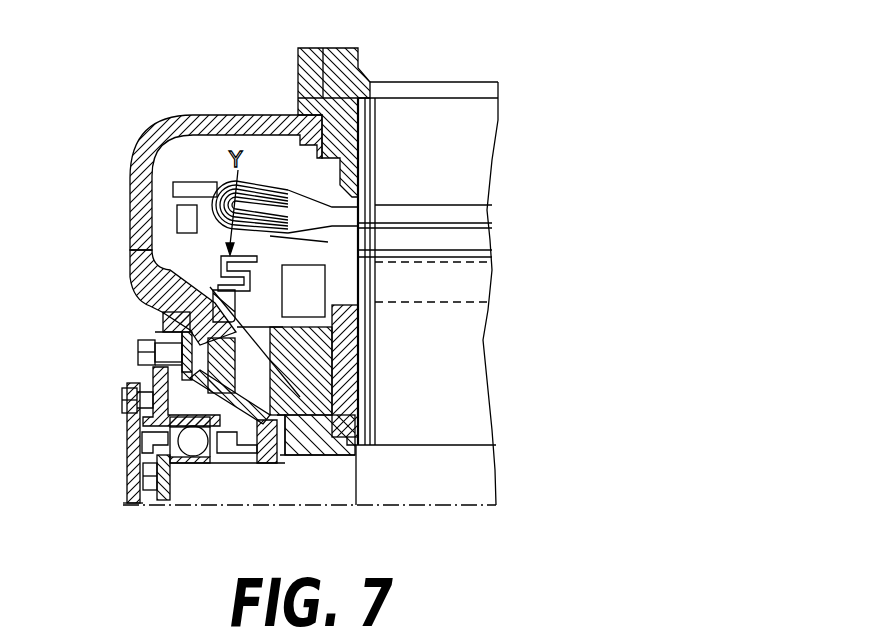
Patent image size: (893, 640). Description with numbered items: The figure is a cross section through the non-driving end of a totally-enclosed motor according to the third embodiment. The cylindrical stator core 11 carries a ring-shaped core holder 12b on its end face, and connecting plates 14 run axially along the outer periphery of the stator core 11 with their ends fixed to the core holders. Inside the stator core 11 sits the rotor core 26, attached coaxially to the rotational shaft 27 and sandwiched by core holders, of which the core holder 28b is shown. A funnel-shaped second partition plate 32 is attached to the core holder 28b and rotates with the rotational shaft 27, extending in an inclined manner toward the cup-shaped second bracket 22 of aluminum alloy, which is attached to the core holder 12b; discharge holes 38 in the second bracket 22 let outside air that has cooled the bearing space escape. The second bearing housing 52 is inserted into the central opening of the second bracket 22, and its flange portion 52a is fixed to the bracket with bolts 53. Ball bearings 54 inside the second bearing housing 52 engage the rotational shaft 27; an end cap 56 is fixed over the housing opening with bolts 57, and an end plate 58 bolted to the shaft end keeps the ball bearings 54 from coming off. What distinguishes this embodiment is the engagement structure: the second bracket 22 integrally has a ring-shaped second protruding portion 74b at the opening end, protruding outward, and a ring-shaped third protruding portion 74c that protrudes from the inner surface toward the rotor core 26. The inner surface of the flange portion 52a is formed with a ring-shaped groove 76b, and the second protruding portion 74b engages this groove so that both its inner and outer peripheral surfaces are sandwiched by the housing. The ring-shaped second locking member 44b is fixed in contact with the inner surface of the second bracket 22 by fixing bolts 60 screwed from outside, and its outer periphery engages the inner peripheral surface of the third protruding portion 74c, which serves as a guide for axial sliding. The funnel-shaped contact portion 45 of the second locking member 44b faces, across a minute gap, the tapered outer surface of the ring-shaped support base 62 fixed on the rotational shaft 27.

The stator core 11 is at (477, 117).
The core holder 12b is at (362, 100).
The connecting plate 14 is at (438, 87).
The second bracket 22 is at (130, 228).
The rotor core 26 is at (480, 407).
The rotational shaft 27 is at (431, 492).
The core holder 28b is at (327, 445).
The second partition plate 32 is at (290, 407).
The discharge hole 38 is at (130, 276).
The second locking member 44b is at (237, 353).
The contact portion 45 is at (253, 398).
The second bearing housing 52 is at (130, 442).
The flange portion 52a is at (150, 320).
The bolt 53 is at (140, 363).
The ball bearing 54 is at (203, 463).
The end cap 56 is at (128, 473).
The bolt 57 is at (118, 407).
The end plate 58 is at (163, 492).
The fixing bolt 60 is at (140, 346).
The support base 62 is at (267, 465).
The second protruding portion 74b is at (147, 376).
The third protruding portion 74c is at (333, 328).
The ring-shaped groove 76b is at (118, 408).